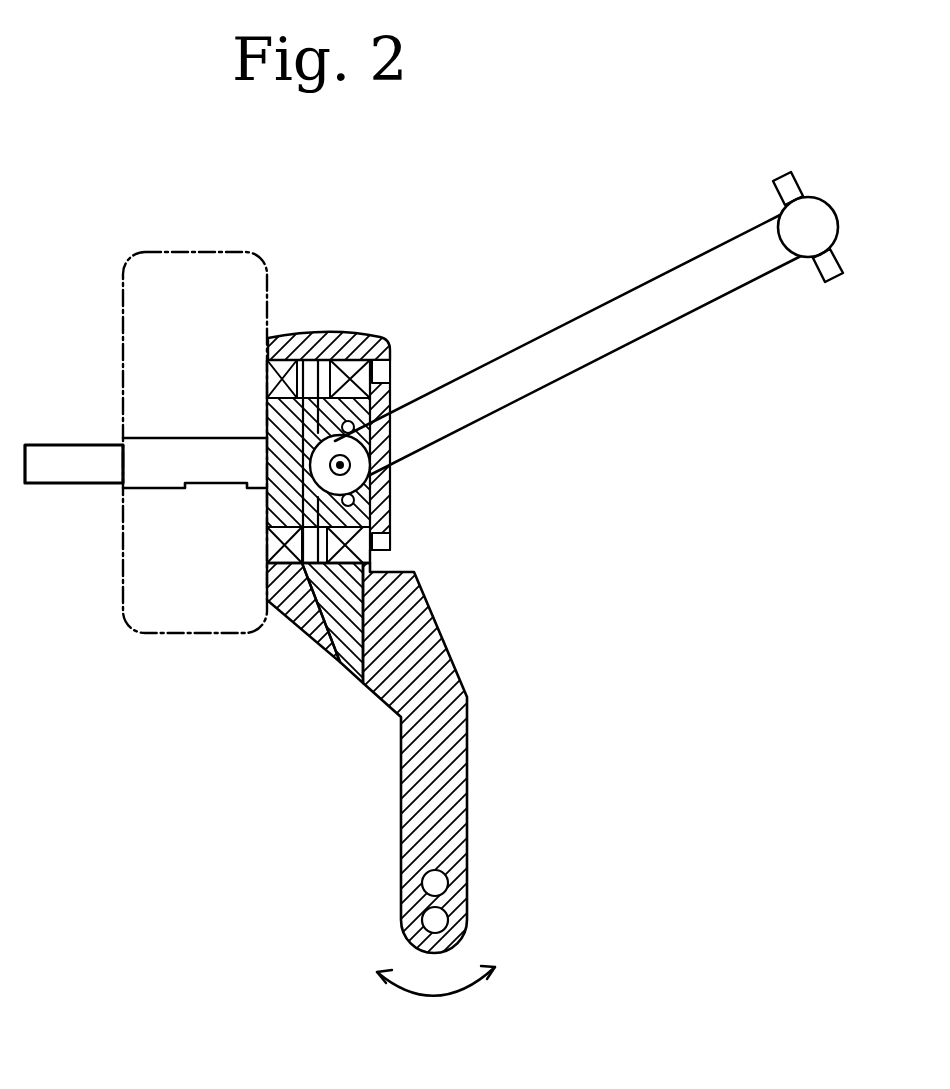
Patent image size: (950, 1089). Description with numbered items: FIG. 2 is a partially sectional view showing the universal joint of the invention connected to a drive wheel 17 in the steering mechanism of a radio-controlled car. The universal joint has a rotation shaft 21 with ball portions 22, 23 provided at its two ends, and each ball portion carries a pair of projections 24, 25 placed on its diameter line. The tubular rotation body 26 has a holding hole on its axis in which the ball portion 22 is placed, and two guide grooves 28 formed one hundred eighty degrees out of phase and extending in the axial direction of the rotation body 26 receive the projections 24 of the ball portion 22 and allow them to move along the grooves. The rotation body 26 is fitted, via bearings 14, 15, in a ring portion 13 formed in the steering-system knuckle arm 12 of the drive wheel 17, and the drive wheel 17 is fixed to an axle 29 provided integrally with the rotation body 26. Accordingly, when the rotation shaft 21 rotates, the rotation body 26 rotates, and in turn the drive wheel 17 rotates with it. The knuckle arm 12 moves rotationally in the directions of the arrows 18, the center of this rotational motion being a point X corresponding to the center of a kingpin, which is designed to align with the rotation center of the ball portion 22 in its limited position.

The knuckle arm 12 is at (430, 676).
The ring portion 13 is at (385, 337).
The bearing 14 is at (363, 565).
The bearing 15 is at (313, 630).
The drive wheel 17 is at (131, 622).
The arrows 18 is at (437, 997).
The rotation shaft 21 is at (538, 350).
The ball portion 22 is at (366, 488).
The ball portion 23 is at (814, 218).
The projections 24 is at (330, 345).
The projections 25 is at (780, 192).
The rotation body 26 is at (277, 610).
The guide grooves 28 is at (290, 340).
The axle 29 is at (202, 472).